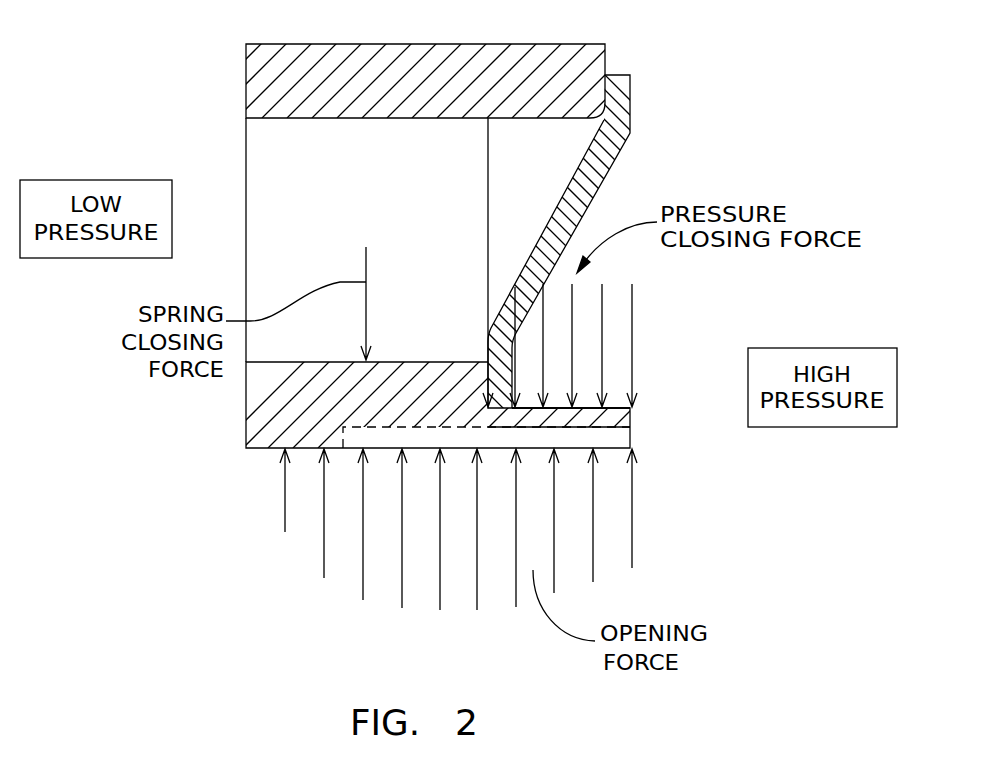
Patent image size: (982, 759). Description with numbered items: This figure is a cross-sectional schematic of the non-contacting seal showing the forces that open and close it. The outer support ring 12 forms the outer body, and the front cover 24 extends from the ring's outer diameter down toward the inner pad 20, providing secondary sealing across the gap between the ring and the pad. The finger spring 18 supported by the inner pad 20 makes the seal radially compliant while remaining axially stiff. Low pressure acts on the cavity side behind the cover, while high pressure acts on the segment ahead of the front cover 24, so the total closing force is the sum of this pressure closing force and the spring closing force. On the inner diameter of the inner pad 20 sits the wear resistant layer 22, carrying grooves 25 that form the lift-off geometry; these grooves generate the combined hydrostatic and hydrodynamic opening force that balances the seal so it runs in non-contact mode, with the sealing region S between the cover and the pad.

The outer support ring 12 is at (357, 57).
The finger spring 18 is at (335, 155).
The front cover 24 is at (622, 117).
The wear resistant layer 22 is at (300, 428).
The inner pad 20 is at (620, 418).
The grooves 25 is at (600, 435).
The sealing surface S is at (493, 373).